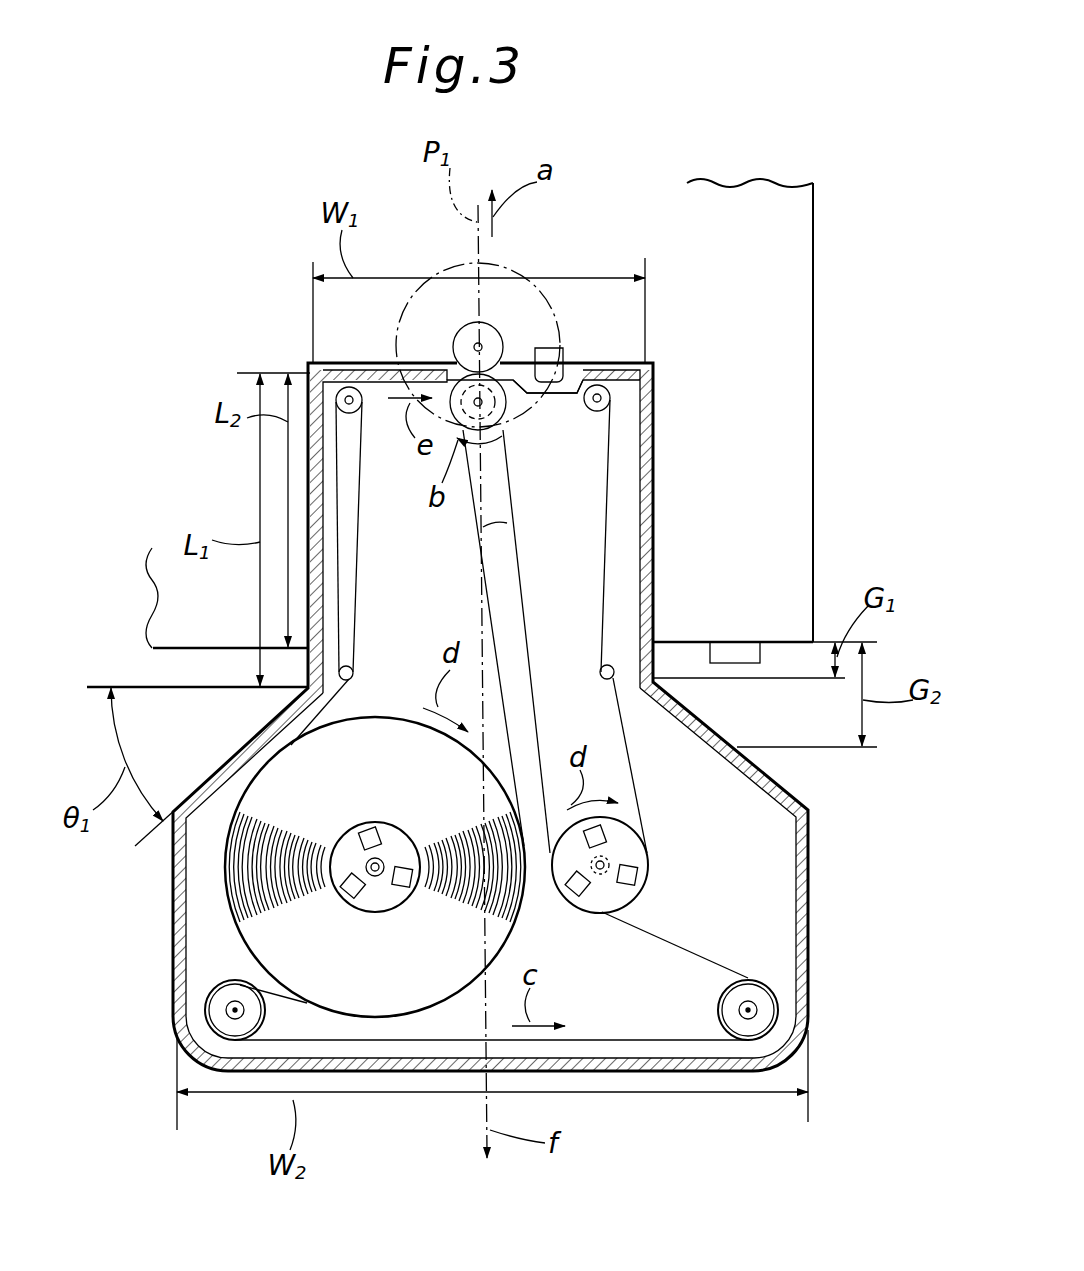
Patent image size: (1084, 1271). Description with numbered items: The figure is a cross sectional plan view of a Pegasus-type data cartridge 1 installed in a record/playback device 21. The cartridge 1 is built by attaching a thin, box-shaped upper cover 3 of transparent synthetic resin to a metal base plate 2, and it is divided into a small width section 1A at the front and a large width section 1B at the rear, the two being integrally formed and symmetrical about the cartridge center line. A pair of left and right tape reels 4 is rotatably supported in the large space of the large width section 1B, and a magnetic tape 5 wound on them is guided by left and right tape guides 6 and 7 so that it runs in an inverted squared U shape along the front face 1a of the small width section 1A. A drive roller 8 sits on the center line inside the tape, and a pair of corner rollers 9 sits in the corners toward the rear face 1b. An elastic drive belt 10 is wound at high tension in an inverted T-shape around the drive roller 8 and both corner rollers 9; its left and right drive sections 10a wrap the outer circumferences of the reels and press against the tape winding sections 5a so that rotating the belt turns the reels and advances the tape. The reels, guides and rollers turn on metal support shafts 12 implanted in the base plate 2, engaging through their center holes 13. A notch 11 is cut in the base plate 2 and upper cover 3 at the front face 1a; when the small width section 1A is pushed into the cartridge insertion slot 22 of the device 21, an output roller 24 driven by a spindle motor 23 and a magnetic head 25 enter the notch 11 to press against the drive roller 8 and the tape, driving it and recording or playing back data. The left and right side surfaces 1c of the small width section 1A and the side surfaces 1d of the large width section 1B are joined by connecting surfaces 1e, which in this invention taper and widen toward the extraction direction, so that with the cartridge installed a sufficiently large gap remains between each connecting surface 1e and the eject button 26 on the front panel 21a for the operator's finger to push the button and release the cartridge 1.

The cartridge 1 is at (366, 1078).
The small width section 1A is at (598, 460).
The large width section 1B is at (443, 1020).
The front face 1a is at (363, 380).
The rear face 1b is at (648, 1070).
The side surfaces of small width section 1c is at (310, 492).
The side surfaces of large width section 1d is at (175, 917).
The connecting surfaces 1e is at (247, 748).
The base plate 2 is at (594, 1022).
The upper cover 3 is at (693, 1068).
The tape reels 4 is at (386, 832).
The magnetic tape 5 is at (363, 392).
The tape winding sections 5a is at (513, 933).
The tape guides 6 is at (332, 387).
The tape guides 7 is at (353, 673).
The drive roller 8 is at (506, 400).
The corner rollers 9 is at (215, 1000).
The drive belt 10 is at (640, 1033).
The drive sections 10a is at (478, 517).
The notch 11 is at (578, 367).
The support shafts 12 is at (600, 398).
The center holes 13 is at (240, 1027).
The record/playback device 21 is at (775, 272).
The front panel 21a is at (777, 650).
The cartridge insertion slot 22 is at (656, 507).
The spindle motor 23 is at (471, 312).
The output roller 24 is at (497, 323).
The magnetic head 25 is at (556, 348).
The eject button 26 is at (737, 652).